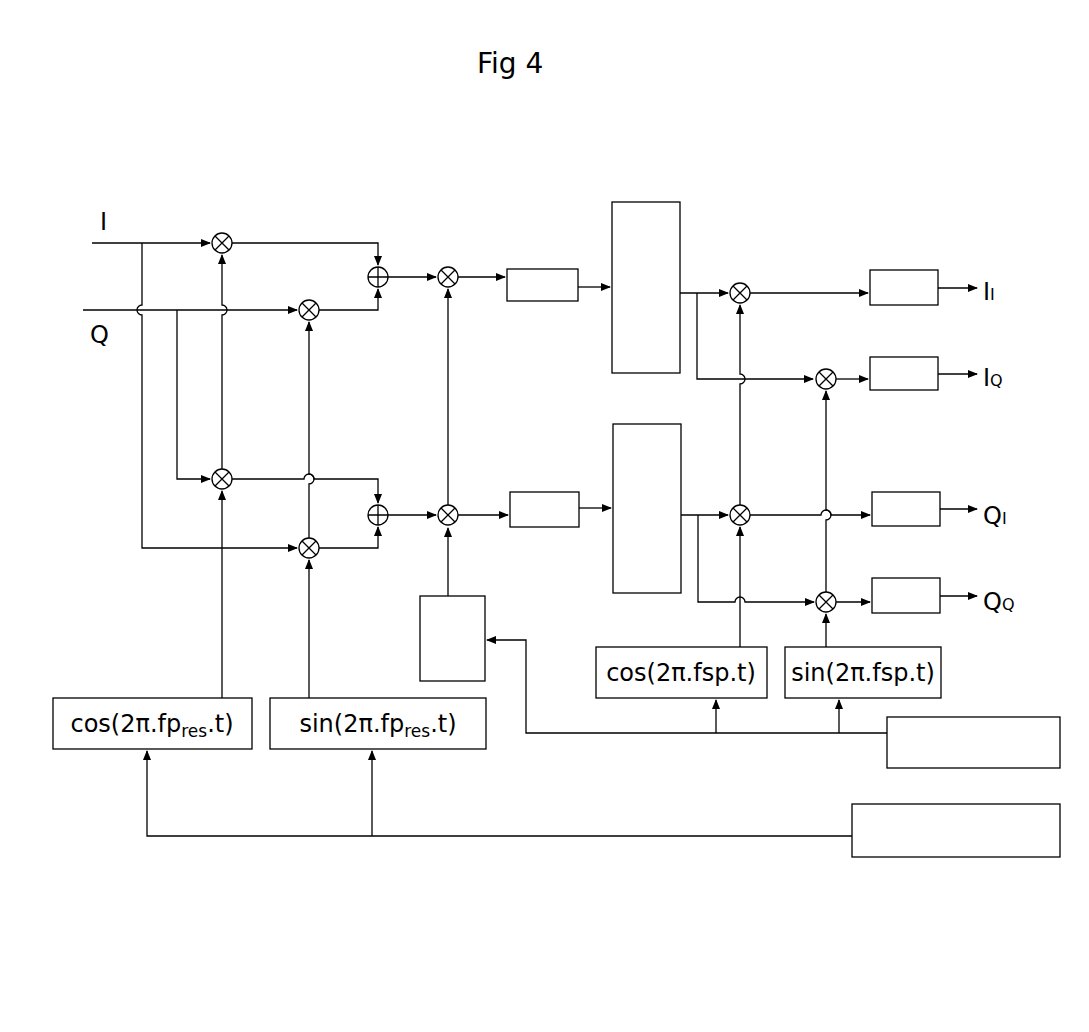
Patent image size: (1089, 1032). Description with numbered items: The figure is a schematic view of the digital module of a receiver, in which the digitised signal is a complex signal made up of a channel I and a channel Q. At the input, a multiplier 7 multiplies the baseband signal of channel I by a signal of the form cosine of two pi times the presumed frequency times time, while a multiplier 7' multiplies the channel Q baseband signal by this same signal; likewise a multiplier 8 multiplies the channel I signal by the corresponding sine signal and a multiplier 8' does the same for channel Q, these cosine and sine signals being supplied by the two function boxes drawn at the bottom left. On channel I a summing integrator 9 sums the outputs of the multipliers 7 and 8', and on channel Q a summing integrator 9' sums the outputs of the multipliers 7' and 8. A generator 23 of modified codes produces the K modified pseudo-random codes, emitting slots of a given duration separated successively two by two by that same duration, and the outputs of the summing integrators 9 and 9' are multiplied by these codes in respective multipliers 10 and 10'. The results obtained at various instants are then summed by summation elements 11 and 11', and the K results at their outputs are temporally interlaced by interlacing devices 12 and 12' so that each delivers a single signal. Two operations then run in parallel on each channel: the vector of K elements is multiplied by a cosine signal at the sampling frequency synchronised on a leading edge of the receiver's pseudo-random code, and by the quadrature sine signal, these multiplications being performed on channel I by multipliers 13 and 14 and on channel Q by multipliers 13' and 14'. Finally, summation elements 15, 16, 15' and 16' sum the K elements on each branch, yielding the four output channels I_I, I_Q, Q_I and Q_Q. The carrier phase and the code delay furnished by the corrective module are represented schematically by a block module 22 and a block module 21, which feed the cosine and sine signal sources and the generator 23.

The multiplier 7 is at (219, 218).
The multiplier 7' is at (238, 447).
The multiplier 8 is at (325, 580).
The multiplier 8' is at (332, 334).
The summing integrator 9 is at (384, 238).
The summing integrator 9' is at (382, 470).
The multiplier 10 is at (452, 242).
The multiplier 10' is at (479, 471).
The summation element 11 is at (542, 249).
The summation element 11' is at (550, 476).
The interlacing device 12 is at (660, 246).
The interlacing device 12' is at (627, 484).
The multiplier 13 is at (755, 251).
The multiplier 13' is at (767, 479).
The multiplier 14 is at (809, 352).
The multiplier 14' is at (802, 581).
The summation element 15 is at (911, 252).
The summation element 15' is at (906, 479).
The summation element 16 is at (930, 352).
The summation element 16' is at (927, 575).
The block module 21 is at (1005, 735).
The block module 22 is at (941, 840).
The generator of modified codes 23 is at (476, 610).